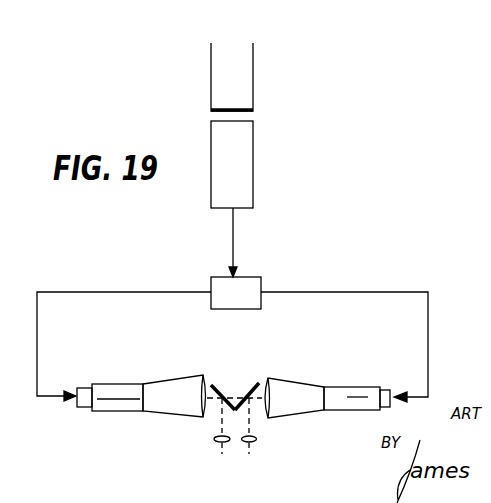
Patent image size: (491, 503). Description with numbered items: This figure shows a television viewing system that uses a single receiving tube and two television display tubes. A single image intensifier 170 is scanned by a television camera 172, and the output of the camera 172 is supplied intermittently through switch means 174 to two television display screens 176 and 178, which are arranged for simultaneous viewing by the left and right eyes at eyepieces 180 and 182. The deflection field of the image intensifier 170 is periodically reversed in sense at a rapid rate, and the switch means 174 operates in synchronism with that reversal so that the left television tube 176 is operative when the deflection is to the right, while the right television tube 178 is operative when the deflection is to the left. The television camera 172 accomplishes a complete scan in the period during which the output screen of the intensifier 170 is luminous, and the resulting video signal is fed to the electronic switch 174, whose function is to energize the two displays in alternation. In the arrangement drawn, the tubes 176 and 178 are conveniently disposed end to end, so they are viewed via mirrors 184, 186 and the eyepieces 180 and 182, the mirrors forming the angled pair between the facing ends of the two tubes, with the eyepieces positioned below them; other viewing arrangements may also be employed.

The image intensifier 170 is at (254, 78).
The television camera 172 is at (254, 150).
The switch means 174 is at (255, 277).
The left television tube 176 is at (141, 408).
The right television tube 178 is at (303, 382).
The eyepiece 180 is at (221, 444).
The eyepiece 182 is at (255, 442).
The mirror 184 is at (215, 383).
The mirror 186 is at (251, 392).